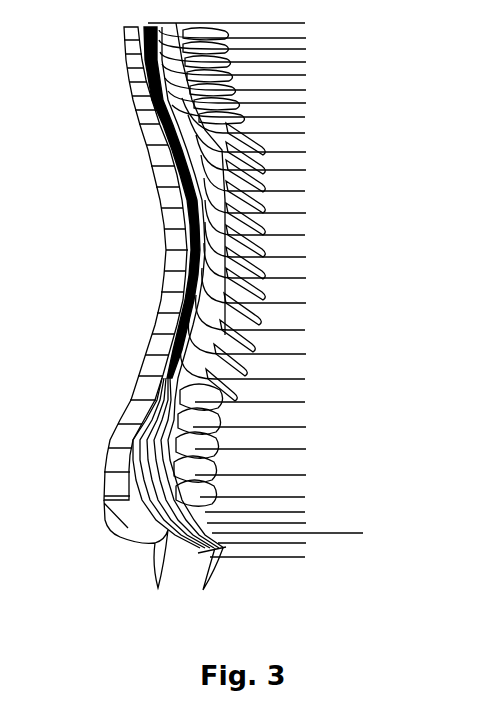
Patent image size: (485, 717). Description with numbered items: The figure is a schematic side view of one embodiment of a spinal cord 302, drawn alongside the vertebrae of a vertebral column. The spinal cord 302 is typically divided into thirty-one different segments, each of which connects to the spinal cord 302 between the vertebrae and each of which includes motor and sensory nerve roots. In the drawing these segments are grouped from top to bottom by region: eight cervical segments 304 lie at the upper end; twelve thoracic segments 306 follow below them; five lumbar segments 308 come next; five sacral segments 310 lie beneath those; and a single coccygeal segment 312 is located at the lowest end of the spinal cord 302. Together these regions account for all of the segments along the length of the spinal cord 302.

The spinal cord 302 is at (158, 144).
The cervical segments 304 is at (335, 7).
The thoracic segments 306 is at (345, 392).
The lumbar segments 308 is at (345, 393).
The sacral segments 310 is at (322, 570).
The coccygeal segment 312 is at (262, 557).